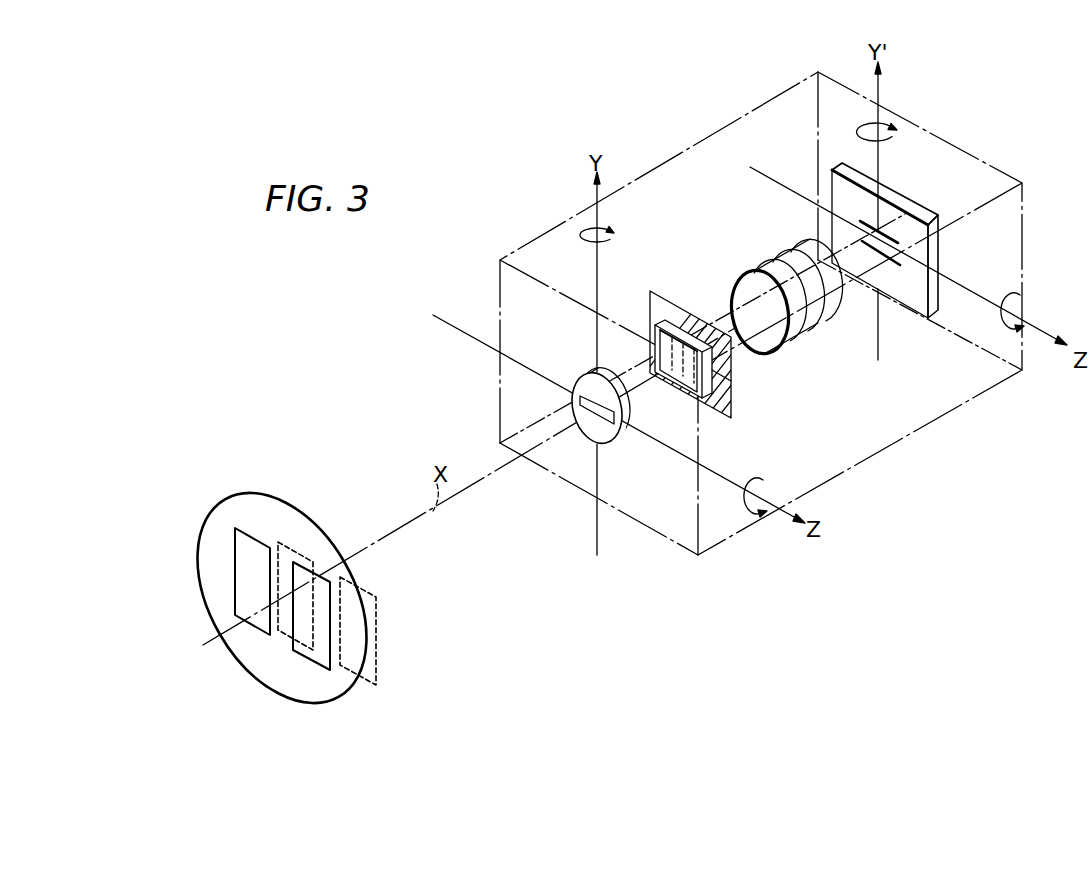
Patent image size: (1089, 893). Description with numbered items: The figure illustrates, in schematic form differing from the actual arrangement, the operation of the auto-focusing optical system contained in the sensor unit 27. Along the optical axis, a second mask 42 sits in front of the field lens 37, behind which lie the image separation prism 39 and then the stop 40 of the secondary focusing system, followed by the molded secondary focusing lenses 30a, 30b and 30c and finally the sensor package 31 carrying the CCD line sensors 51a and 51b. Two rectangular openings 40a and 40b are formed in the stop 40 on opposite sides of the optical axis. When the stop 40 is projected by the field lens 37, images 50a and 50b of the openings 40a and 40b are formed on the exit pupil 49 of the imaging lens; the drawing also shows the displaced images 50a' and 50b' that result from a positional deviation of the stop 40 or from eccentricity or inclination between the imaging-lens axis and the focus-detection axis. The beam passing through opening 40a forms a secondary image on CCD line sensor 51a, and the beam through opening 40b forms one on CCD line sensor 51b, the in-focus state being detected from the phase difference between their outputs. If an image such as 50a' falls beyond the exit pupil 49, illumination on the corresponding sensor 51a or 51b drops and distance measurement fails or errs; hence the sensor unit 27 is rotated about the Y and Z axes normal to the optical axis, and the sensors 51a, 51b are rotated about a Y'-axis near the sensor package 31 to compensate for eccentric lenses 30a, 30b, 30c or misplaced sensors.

The sensor unit 27 is at (530, 243).
The sensor package 31 is at (938, 246).
The CCD line sensor 51a is at (902, 264).
The CCD line sensor 51b is at (898, 242).
The secondary focusing lens 30a is at (777, 348).
The secondary focusing lens 30b is at (808, 331).
The secondary focusing lens 30c is at (833, 313).
The field lens 37 is at (624, 413).
The second mask 42 is at (582, 423).
The image separation prism 39 is at (656, 324).
The stop 40 is at (731, 413).
The rectangular opening 40a is at (678, 325).
The rectangular opening 40b is at (720, 376).
The exit pupil 49 is at (256, 494).
The image of opening 50a is at (308, 632).
The image of opening 50b is at (209, 581).
The deviated image of opening 50a' is at (393, 631).
The deviated image of opening 50b' is at (311, 566).